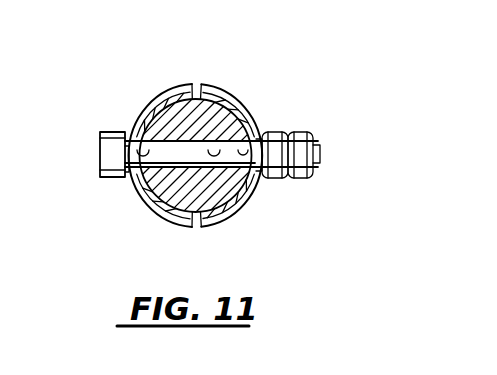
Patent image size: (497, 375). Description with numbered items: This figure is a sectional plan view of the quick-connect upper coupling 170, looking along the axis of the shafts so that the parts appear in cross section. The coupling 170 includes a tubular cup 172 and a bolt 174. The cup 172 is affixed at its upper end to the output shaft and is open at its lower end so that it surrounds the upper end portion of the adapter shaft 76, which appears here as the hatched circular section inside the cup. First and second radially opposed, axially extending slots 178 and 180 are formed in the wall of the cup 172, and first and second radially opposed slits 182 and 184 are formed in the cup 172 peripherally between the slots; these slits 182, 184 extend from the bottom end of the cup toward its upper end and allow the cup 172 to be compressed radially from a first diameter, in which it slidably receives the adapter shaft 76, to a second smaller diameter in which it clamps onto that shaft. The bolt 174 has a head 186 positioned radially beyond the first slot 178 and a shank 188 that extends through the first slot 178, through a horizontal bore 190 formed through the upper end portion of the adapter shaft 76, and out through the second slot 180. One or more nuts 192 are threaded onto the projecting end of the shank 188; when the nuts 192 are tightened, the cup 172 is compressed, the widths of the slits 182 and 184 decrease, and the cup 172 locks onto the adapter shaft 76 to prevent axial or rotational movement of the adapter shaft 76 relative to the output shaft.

The upper coupling 170 is at (217, 140).
The tubular cup 172 is at (212, 102).
The bolt 174 is at (108, 185).
The adapter shaft 76 is at (220, 200).
The first slot 178 is at (140, 146).
The second slot 180 is at (258, 120).
The first slit 182 is at (194, 231).
The second slit 184 is at (194, 86).
The head 186 is at (100, 154).
The shank 188 is at (320, 160).
The horizontal bore 190 is at (238, 115).
The nuts 192 is at (296, 121).